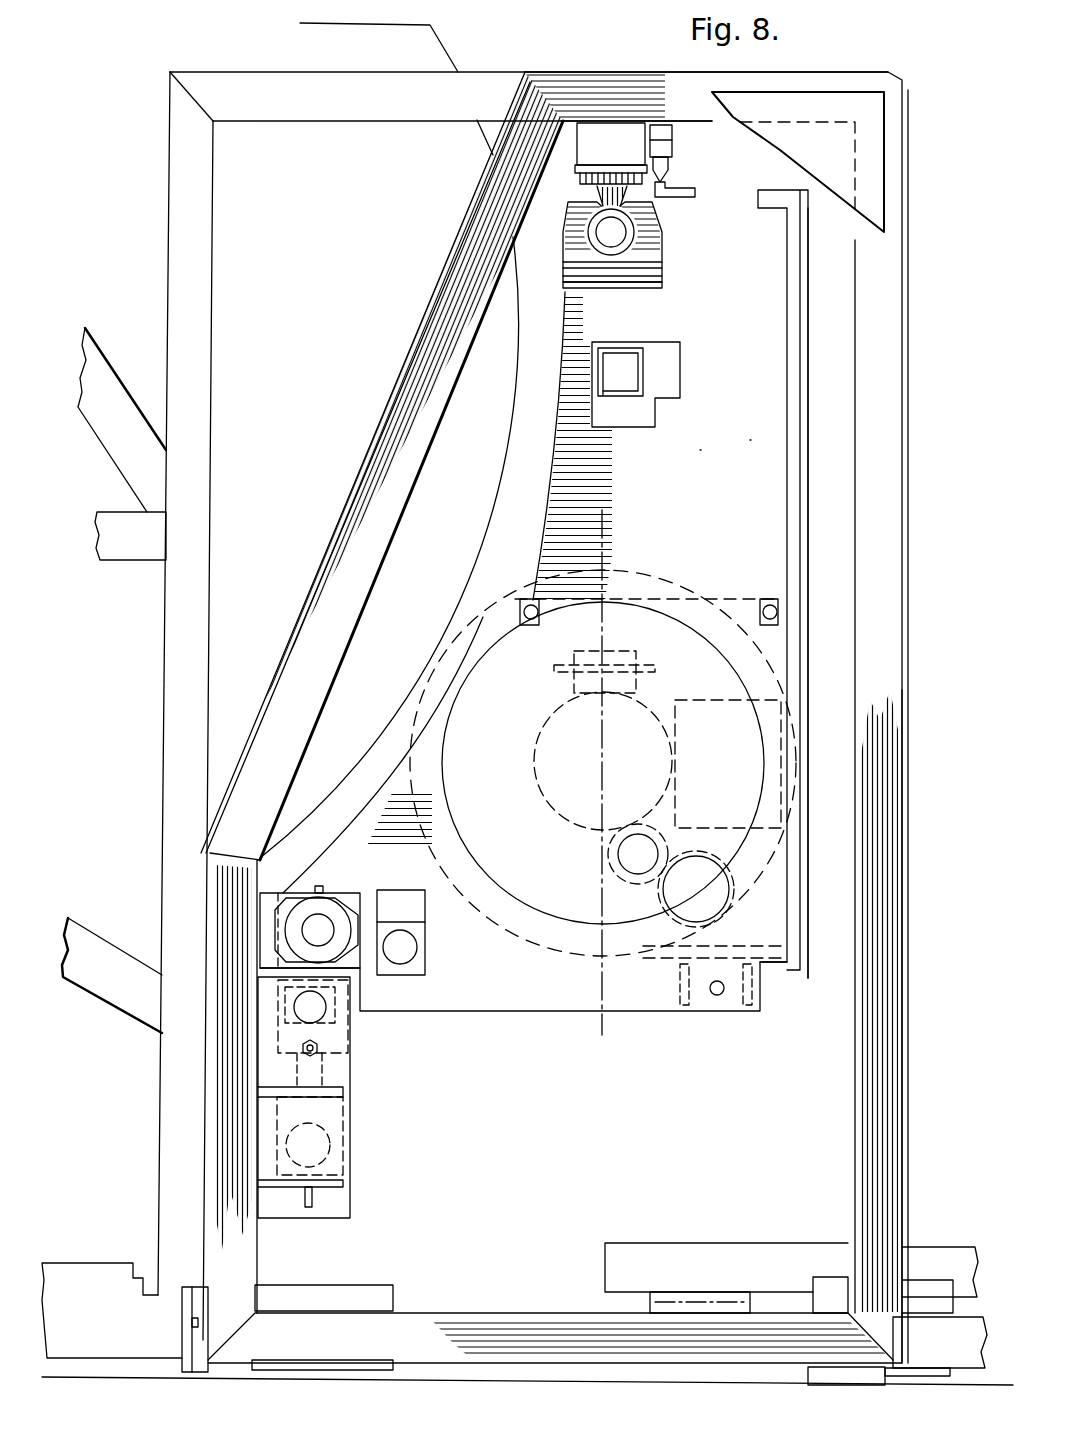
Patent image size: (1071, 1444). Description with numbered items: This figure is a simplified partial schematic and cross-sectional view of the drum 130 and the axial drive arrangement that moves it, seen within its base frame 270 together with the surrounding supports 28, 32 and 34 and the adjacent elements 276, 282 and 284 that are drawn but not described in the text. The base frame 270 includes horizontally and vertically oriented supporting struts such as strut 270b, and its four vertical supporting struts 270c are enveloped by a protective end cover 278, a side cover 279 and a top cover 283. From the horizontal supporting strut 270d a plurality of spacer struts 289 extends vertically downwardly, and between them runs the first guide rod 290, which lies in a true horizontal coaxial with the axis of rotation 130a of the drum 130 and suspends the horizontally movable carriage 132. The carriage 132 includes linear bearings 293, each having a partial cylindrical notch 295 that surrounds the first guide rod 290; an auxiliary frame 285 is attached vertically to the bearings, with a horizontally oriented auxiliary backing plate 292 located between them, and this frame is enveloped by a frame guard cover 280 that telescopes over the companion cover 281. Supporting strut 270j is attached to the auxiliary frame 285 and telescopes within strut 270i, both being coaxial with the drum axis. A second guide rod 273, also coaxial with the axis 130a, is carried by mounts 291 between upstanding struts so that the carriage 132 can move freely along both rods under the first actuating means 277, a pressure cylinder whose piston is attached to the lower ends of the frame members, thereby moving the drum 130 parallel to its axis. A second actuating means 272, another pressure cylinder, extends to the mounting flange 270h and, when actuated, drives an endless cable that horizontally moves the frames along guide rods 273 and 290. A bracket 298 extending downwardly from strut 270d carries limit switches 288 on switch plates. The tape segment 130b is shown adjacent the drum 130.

The support bracket 28 is at (448, 48).
The wall support 32 is at (153, 600).
The base 34 is at (105, 1252).
The drum 130 is at (662, 577).
The axis of rotation 130a is at (612, 764).
The tape segment 130b is at (605, 540).
The horizontally movable carriage 132 is at (760, 441).
The base frame 270 is at (484, 1328).
The supporting strut 270b is at (220, 1079).
The vertical supporting strut 270c is at (893, 715).
The horizontal supporting strut 270d is at (567, 88).
The mounting flange 270h is at (342, 1205).
The supporting strut 270i is at (680, 358).
The supporting strut 270j is at (623, 395).
The second actuating means 272 is at (325, 1140).
The second guide rod 273 is at (445, 870).
The idler roller 276 is at (318, 1008).
The first actuating means 277 is at (403, 950).
The protective end cover 278 is at (868, 150).
The side cover 279 is at (904, 199).
The frame guard cover 280 is at (800, 590).
The frame guard cover 281 is at (790, 375).
The mounting plate 282 is at (740, 600).
The top cover 283 is at (733, 72).
The nozzle 284 is at (670, 168).
The auxiliary frame 285 is at (762, 512).
The limit switch 288 is at (663, 140).
The spacer strut 289 is at (610, 140).
The first guide rod 290 is at (617, 230).
The mount 291 is at (325, 928).
The auxiliary backing plate 292 is at (638, 275).
The linear bearing 293 is at (650, 255).
The partial cylindrical notch 295 is at (605, 248).
The bracket 298 is at (663, 127).